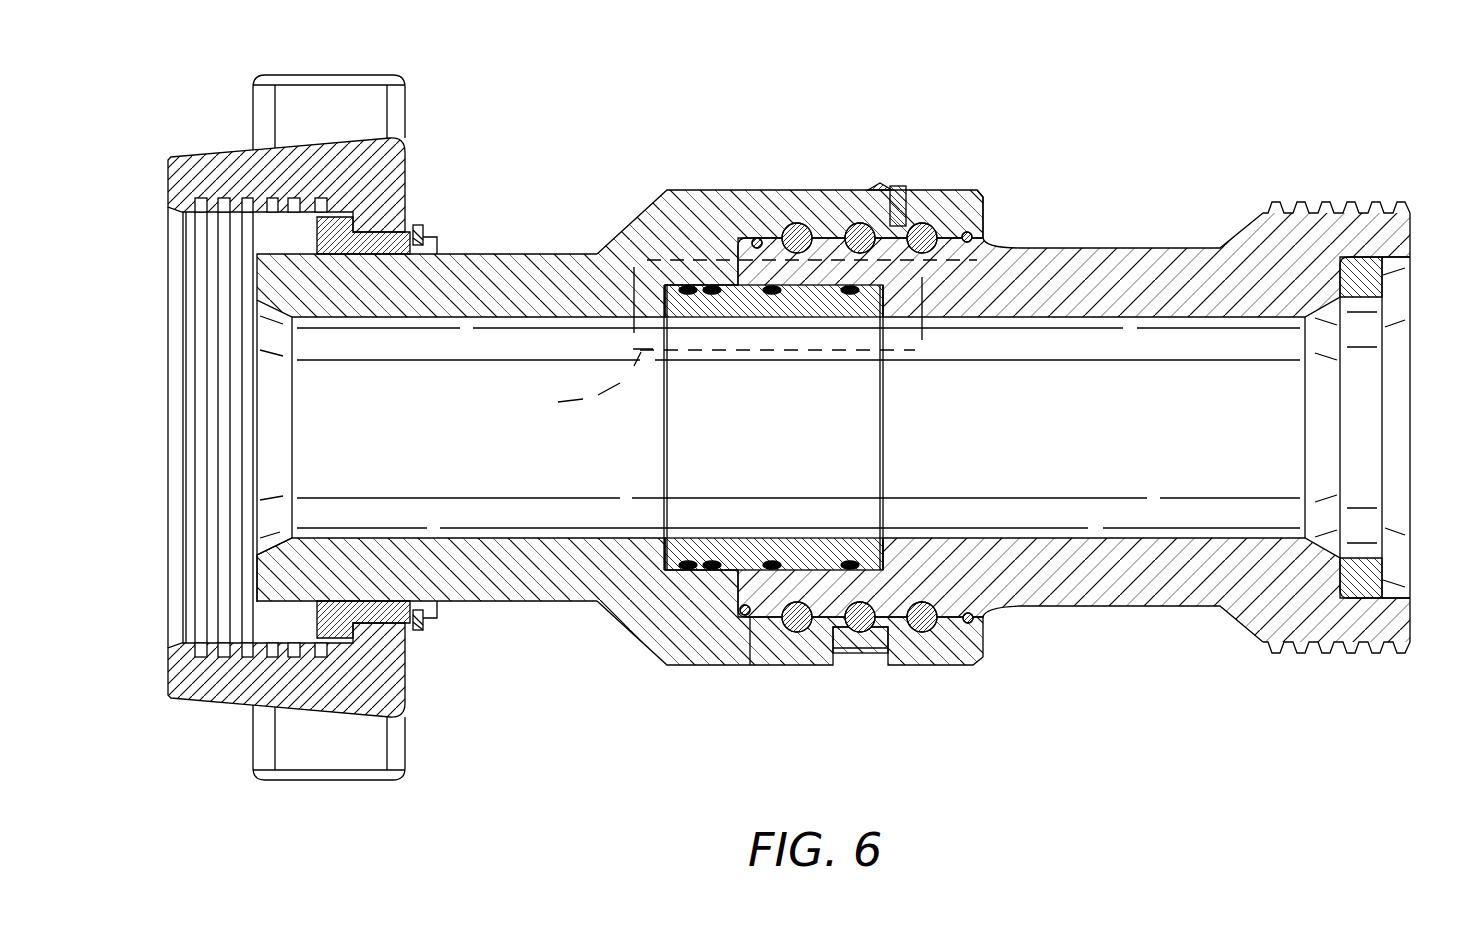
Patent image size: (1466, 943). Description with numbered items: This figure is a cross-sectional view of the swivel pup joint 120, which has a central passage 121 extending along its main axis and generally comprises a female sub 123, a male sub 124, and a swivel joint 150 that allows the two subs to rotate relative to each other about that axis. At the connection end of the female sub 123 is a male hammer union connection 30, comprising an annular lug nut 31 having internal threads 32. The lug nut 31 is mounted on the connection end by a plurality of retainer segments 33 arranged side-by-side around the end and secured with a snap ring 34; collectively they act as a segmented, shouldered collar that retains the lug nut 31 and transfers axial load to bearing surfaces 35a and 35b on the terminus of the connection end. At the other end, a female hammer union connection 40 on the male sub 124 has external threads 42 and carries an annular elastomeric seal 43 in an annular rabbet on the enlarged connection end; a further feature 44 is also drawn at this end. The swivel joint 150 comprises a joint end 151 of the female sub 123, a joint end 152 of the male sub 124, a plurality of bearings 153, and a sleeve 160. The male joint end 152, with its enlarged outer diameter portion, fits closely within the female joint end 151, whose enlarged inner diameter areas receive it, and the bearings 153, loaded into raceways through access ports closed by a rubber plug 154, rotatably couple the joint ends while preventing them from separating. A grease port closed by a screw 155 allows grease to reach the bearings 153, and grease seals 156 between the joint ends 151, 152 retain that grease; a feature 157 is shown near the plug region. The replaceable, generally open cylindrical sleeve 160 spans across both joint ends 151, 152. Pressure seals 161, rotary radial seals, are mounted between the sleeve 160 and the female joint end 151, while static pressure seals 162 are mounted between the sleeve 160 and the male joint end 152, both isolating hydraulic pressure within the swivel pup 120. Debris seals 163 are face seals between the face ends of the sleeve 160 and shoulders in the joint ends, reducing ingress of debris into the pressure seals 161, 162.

The swivel pup joint 120 is at (624, 60).
The male hammer union connection 30 is at (192, 704).
The lug nut 31 is at (393, 167).
The internal threads 32 is at (184, 397).
The retainer segments 33 is at (388, 240).
The snap ring 34 is at (425, 232).
The bearing surface 35a is at (270, 540).
The bearing surface 35b is at (252, 572).
The central passage 121 is at (423, 446).
The female sub 123 is at (553, 270).
The male sub 124 is at (1143, 260).
The swivel joint 150 is at (953, 672).
The joint end of female sub 151 is at (955, 200).
The joint end of male sub 152 is at (935, 297).
The bearings 153 is at (797, 223).
The rubber plug 154 is at (862, 655).
The screw 155 is at (900, 185).
The grease seals 156 is at (757, 238).
The slot 157 is at (750, 645).
The sleeve 160 is at (788, 448).
The pressure seals 161 is at (712, 296).
The pressure seals 162 is at (773, 560).
The debris seals 163 is at (863, 295).
The female hammer union connection 40 is at (1414, 241).
The external threads 42 is at (1297, 657).
The elastomeric seal 43 is at (1358, 598).
The counterbore face 44 is at (1398, 578).